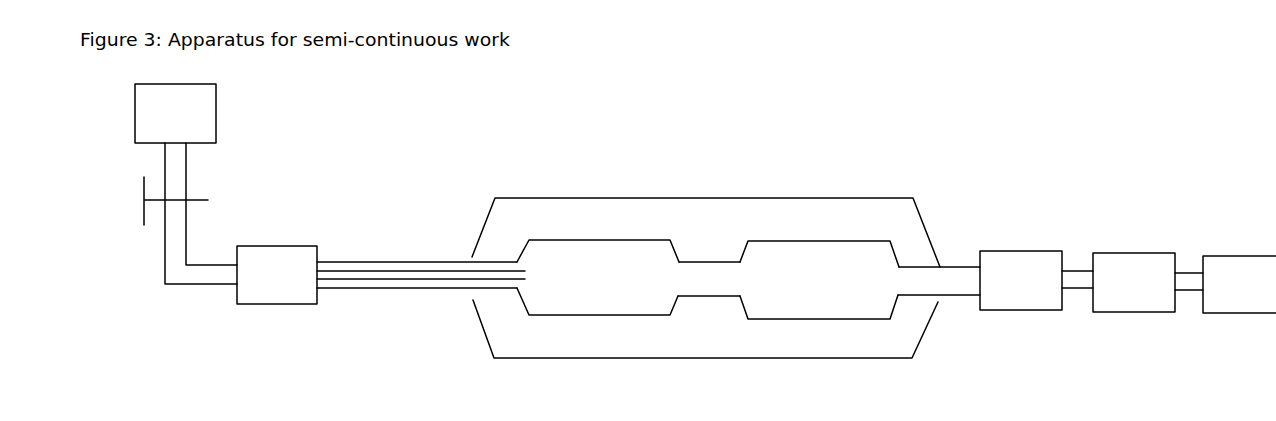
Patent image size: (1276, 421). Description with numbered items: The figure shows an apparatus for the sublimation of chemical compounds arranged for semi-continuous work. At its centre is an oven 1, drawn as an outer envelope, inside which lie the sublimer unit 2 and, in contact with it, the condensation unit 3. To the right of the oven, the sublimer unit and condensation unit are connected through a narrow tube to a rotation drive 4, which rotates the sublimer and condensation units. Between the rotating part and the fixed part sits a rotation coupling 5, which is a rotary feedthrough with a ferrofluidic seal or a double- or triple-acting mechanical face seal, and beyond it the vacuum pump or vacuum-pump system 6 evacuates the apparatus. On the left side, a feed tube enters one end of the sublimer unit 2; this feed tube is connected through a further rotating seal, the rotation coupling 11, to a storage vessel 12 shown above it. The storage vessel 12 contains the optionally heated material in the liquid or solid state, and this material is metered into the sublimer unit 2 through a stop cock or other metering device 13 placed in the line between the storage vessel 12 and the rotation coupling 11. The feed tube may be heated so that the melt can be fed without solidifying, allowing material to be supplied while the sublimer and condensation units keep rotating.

The oven 1 is at (533, 350).
The sublimer unit 2 is at (598, 277).
The condensation unit 3 is at (819, 280).
The rotation drive 4 is at (1021, 280).
The rotation coupling 5 is at (1134, 282).
The vacuum pump or vacuum-pump system 6 is at (1239, 284).
The rotation coupling 11 is at (277, 275).
The storage vessel 12 is at (175, 113).
The metering device 13 is at (133, 221).